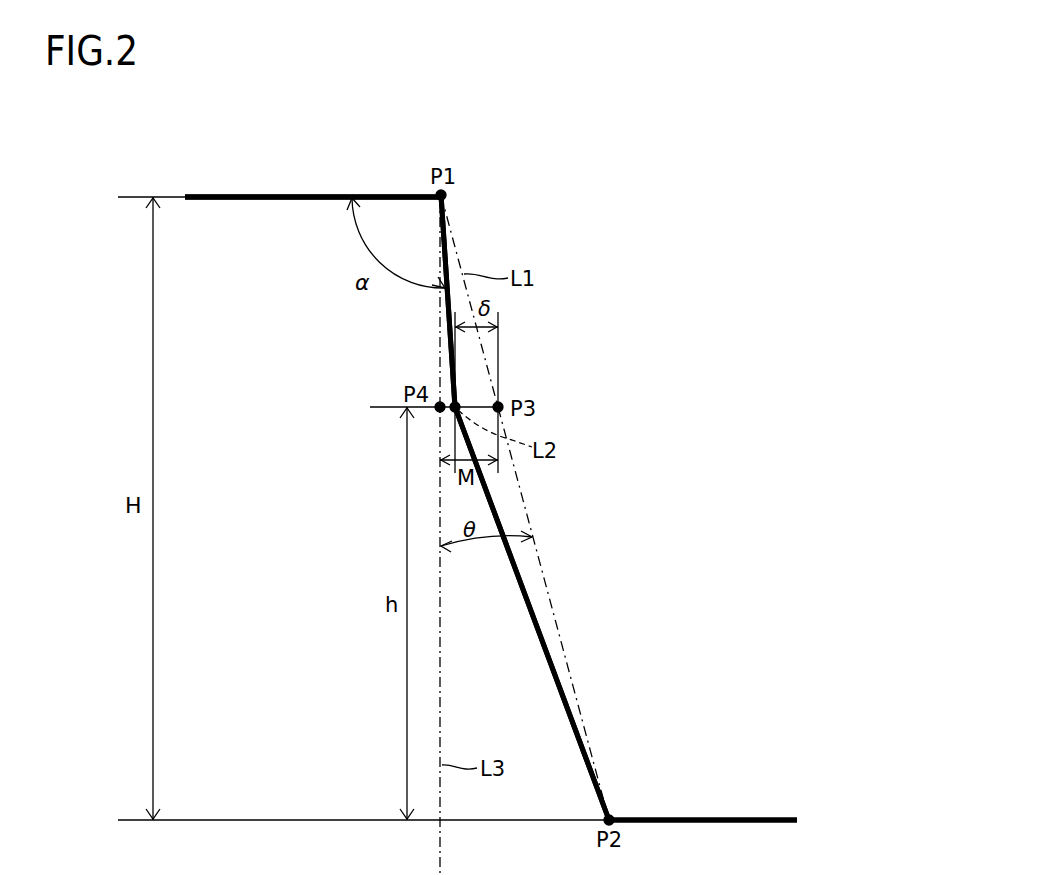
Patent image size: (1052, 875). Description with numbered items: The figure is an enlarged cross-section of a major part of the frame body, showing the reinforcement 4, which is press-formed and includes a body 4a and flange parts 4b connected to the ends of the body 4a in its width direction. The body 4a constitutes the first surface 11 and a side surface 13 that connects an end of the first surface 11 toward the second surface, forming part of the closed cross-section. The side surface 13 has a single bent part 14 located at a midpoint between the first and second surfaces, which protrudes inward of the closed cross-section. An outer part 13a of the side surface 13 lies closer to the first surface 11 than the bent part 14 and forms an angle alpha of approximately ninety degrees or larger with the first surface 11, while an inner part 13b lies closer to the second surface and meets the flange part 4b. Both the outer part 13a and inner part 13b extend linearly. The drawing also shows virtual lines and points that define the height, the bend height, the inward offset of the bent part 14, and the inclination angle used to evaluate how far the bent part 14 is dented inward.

The reinforcement 4 is at (222, 180).
The first surface 11 is at (302, 196).
The body 4a is at (366, 194).
The flange part 4b is at (722, 818).
The side surface 13 is at (525, 507).
The outer part 13a is at (448, 311).
The inner part 13b is at (524, 588).
The bent part 14 is at (452, 402).